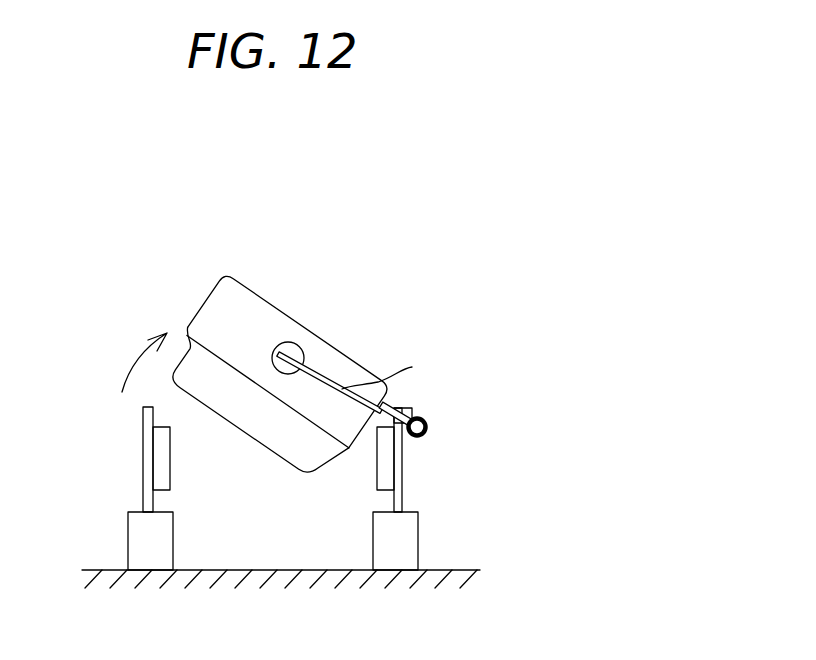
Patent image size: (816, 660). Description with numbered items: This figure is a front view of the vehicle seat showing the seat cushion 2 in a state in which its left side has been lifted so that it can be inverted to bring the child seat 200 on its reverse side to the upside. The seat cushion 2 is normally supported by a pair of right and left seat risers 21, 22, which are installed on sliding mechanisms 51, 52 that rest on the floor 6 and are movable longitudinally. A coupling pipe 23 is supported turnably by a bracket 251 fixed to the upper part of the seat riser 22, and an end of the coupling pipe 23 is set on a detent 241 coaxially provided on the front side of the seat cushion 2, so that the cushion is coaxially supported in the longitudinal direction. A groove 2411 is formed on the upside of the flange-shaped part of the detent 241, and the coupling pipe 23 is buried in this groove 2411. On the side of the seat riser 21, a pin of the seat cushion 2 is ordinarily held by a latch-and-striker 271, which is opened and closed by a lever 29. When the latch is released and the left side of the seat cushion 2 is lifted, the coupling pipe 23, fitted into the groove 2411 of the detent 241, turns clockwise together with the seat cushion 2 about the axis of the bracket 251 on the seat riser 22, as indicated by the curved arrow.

The seat cushion 2 is at (252, 289).
The child seat 200 is at (247, 426).
The groove 2411 is at (284, 344).
The detent 241 is at (298, 356).
The coupling pipe 23 is at (394, 390).
The bracket 251 is at (427, 418).
The lever 29 is at (386, 461).
The seat riser 22 is at (406, 477).
The seat riser 21 is at (147, 440).
The latch-and-striker 271 is at (158, 466).
The sliding mechanism 51 is at (128, 543).
The sliding mechanism 52 is at (419, 537).
The floor 6 is at (268, 569).